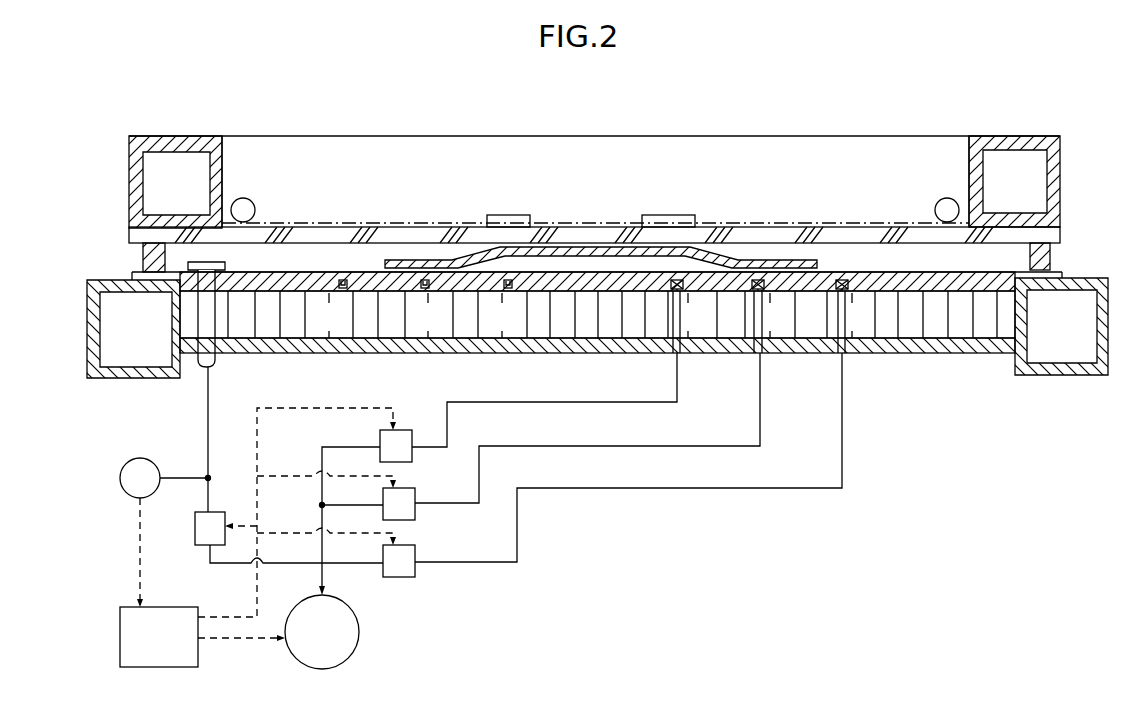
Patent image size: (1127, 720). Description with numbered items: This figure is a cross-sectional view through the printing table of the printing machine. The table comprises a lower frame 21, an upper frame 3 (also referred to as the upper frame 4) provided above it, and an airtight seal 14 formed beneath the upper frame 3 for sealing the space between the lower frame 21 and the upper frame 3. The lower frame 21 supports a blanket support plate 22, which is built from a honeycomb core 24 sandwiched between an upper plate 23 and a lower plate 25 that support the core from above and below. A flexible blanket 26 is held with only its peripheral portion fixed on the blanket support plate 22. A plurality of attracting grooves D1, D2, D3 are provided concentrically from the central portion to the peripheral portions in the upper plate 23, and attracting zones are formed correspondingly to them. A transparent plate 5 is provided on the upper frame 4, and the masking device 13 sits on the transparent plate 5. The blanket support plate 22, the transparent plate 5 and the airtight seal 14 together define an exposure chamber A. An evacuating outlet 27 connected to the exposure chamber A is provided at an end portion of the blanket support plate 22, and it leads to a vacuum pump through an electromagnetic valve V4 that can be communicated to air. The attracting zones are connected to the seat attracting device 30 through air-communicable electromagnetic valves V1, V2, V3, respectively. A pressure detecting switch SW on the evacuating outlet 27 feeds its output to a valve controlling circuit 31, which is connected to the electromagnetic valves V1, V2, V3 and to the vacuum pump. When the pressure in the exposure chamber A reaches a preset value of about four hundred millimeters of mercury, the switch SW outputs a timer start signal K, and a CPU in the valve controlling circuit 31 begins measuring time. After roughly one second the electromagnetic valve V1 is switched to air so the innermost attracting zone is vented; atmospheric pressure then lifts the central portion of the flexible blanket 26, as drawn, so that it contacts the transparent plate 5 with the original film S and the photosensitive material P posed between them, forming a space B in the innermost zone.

The upper frame 3 is at (421, 133).
The upper frame 4 is at (1012, 133).
The transparent plate 5 is at (840, 237).
The masking device 13 is at (399, 226).
The airtight seal 14 is at (143, 257).
The lower frame 21 is at (120, 378).
The blanket support plate 22 is at (597, 357).
The upper plate 23 is at (981, 285).
The honeycomb core 24 is at (934, 335).
The lower plate 25 is at (990, 404).
The flexible blanket 26 is at (362, 272).
The evacuating outlet 27 is at (198, 259).
The seat attracting device 30 is at (335, 669).
The valve controlling circuit 31 is at (175, 667).
The exposure chamber A is at (294, 255).
The space B is at (592, 288).
The photosensitive material P is at (438, 266).
The original film S is at (617, 246).
The timer start signal K is at (140, 546).
The attracting groove D1 is at (508, 290).
The attracting groove D2 is at (425, 290).
The attracting groove D3 is at (343, 290).
The electromagnetic valve V1 is at (528, 407).
The electromagnetic valve V2 is at (571, 436).
The electromagnetic valve V3 is at (612, 465).
The electromagnetic valve V4 is at (289, 537).
The pressure detecting switch SW is at (165, 478).